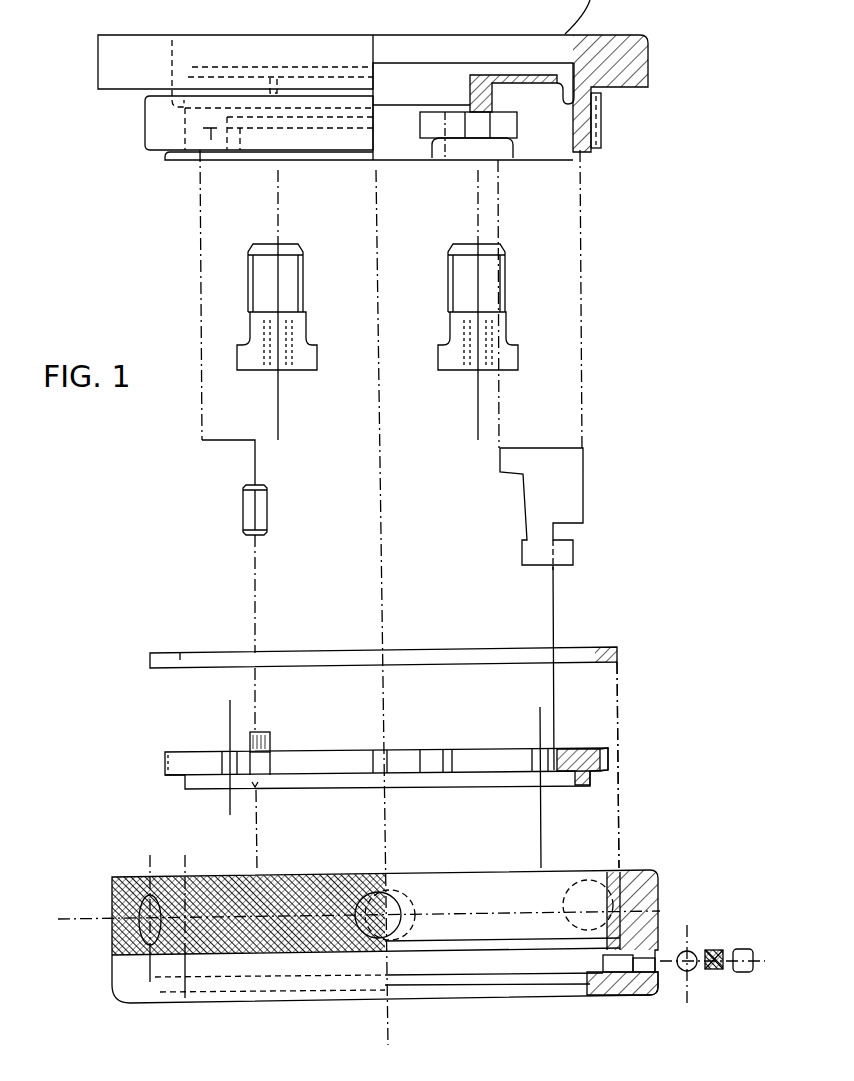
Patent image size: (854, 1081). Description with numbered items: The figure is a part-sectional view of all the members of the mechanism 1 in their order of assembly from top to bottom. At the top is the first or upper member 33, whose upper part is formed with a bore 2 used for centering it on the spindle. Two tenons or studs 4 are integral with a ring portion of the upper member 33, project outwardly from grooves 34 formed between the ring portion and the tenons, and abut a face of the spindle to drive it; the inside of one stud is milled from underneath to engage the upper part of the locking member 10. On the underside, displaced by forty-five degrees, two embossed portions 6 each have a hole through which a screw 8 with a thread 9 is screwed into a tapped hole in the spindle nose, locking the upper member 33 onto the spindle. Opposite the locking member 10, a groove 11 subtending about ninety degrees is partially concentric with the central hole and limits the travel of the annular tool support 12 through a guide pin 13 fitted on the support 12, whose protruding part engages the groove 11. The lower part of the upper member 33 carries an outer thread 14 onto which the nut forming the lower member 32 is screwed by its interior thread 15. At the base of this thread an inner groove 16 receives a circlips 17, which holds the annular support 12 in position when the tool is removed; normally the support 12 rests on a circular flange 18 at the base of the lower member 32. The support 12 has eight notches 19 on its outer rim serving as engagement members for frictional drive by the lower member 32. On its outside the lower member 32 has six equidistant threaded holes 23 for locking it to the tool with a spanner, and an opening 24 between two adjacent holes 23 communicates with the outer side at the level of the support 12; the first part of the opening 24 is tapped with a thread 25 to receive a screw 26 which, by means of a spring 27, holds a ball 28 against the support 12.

The upper clamping assembly 1 is at (76, 118).
The bore 2 is at (178, 41).
The tenon 4 is at (493, 76).
The embossed portion 6 is at (422, 150).
The screw 8 is at (302, 363).
The thread 9 is at (305, 284).
The locking member 10 is at (565, 500).
The groove 11 is at (210, 138).
The annular support 12 is at (113, 772).
The guide pin 13 is at (246, 516).
The outer thread 14 is at (146, 126).
The interior thread 15 is at (620, 840).
The inner groove 16 is at (500, 945).
The circlips 17 is at (447, 647).
The circular flange 18 is at (425, 985).
The notch 19 is at (222, 752).
The threaded hole 23 is at (408, 870).
The opening 24 is at (655, 968).
The thread 25 is at (655, 996).
The screw 26 is at (745, 975).
The spring 27 is at (715, 949).
The ball 28 is at (690, 972).
The lower member 32 is at (110, 893).
The upper member 33 is at (110, 65).
The groove 34 is at (543, 150).